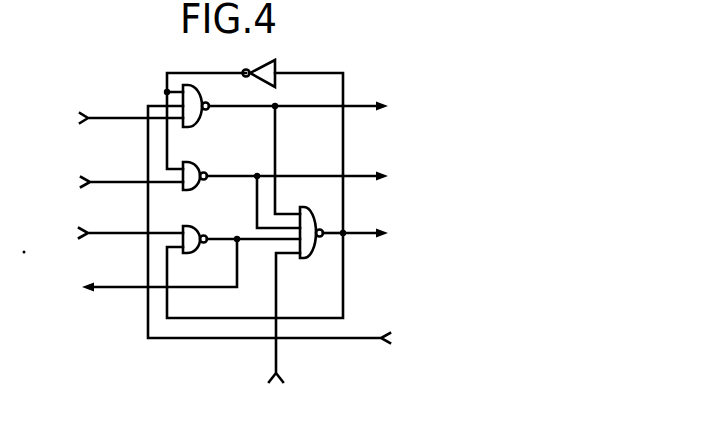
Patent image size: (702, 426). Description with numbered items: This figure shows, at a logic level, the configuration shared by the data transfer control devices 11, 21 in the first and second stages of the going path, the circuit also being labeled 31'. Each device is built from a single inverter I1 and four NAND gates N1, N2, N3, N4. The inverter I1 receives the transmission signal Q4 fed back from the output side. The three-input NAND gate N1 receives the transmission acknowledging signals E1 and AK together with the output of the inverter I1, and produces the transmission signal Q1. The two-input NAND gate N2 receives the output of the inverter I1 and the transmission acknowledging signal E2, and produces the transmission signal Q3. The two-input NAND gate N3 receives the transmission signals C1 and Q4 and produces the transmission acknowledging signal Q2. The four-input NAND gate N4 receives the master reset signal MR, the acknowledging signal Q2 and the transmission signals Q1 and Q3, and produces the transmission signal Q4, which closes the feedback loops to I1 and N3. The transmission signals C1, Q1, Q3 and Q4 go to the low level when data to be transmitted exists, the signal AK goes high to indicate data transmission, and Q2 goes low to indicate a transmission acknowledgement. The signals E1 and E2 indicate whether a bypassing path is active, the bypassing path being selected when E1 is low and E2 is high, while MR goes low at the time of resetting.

The data transfer control device 11 is at (555, 115).
The data transfer control device 21 is at (600, 115).
The latch circuit 31' is at (319, 226).
The inverter I1 is at (273, 64).
The 3-input NAND gate N1 is at (263, 149).
The 2-input NAND gate N2 is at (263, 195).
The 2-input NAND gate N3 is at (241, 248).
The 4-input NAND gate N4 is at (321, 248).
The transmission acknowledging signal input E1 is at (113, 117).
The transmission acknowledging signal input E2 is at (113, 184).
The transmission signal input C1 is at (113, 234).
The transmission signal output Q1 is at (385, 109).
The transmission acknowledging signal output Q2 is at (140, 269).
The transmission signal output Q3 is at (385, 179).
The transmission signal output Q4 is at (385, 237).
The transmission acknowledging signal input AK is at (285, 229).
The reset input MR is at (279, 332).